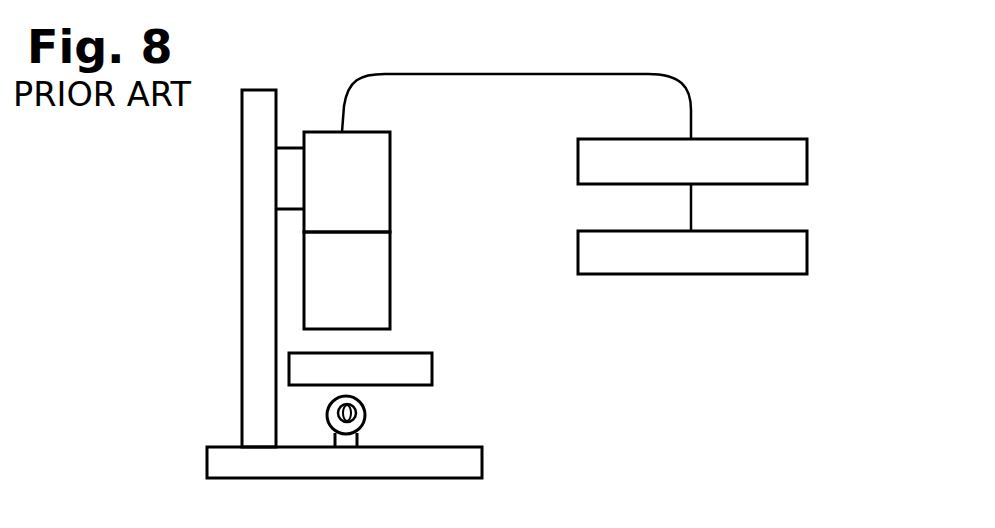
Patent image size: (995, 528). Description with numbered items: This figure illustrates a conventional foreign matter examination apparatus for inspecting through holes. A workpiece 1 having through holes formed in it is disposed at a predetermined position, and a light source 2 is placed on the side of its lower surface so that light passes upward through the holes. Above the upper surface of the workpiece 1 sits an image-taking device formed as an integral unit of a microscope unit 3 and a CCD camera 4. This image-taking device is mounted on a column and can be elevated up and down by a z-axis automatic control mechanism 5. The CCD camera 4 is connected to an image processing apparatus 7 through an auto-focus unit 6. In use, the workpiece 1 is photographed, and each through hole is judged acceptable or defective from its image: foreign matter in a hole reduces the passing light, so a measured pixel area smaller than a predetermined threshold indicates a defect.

The workpiece 1 is at (432, 362).
The light source 2 is at (366, 418).
The microscope unit 3 is at (390, 272).
The CCD camera 4 is at (390, 170).
The z-axis automatic control mechanism 5 is at (192, 256).
The auto-focus unit 6 is at (807, 165).
The image processing apparatus 7 is at (807, 252).